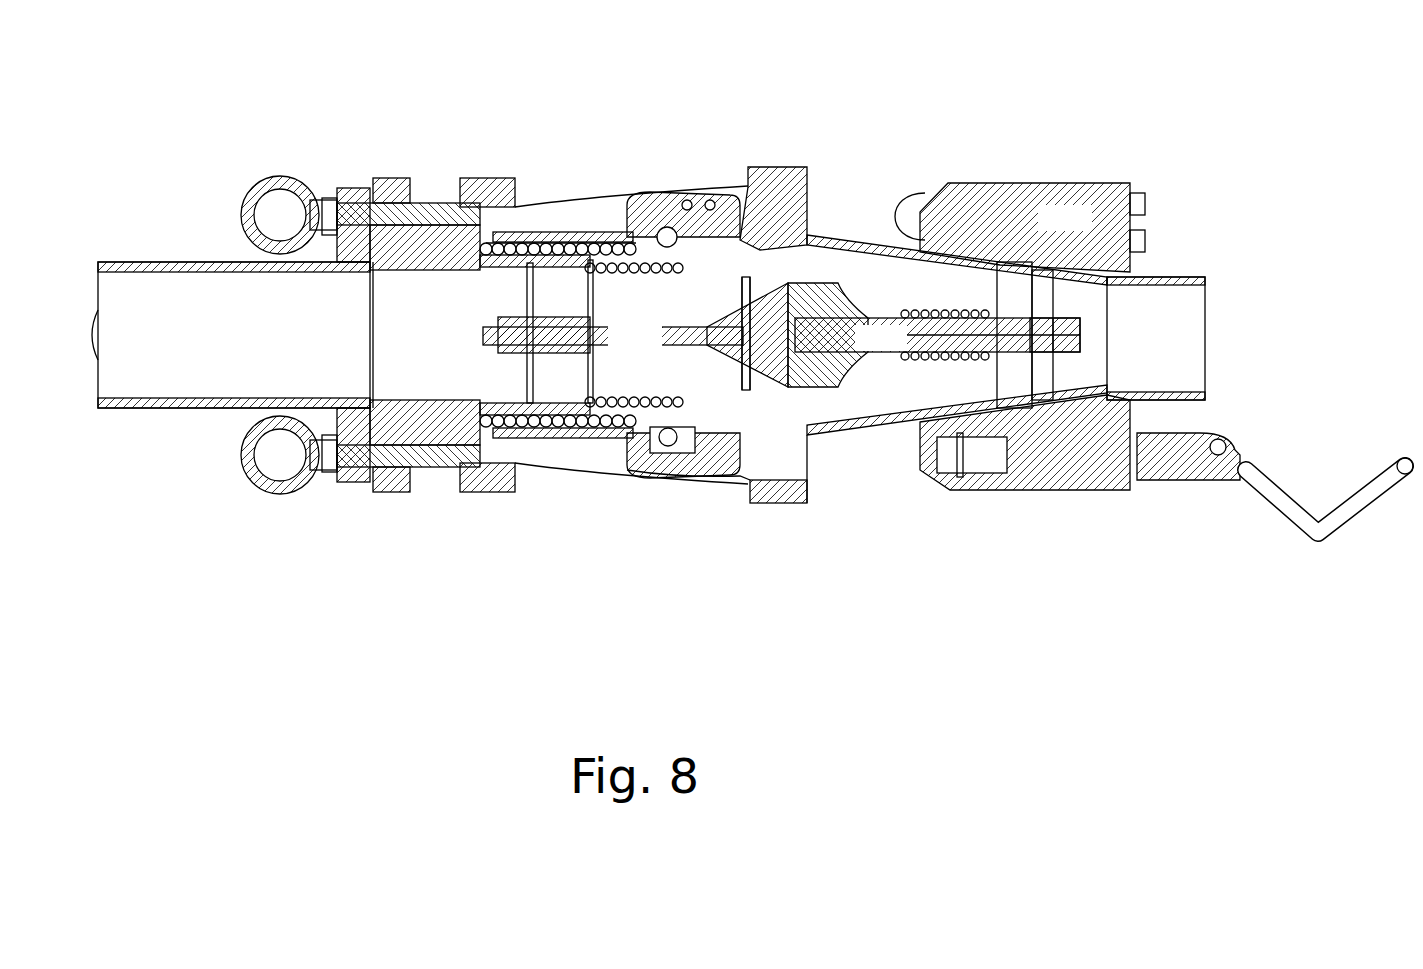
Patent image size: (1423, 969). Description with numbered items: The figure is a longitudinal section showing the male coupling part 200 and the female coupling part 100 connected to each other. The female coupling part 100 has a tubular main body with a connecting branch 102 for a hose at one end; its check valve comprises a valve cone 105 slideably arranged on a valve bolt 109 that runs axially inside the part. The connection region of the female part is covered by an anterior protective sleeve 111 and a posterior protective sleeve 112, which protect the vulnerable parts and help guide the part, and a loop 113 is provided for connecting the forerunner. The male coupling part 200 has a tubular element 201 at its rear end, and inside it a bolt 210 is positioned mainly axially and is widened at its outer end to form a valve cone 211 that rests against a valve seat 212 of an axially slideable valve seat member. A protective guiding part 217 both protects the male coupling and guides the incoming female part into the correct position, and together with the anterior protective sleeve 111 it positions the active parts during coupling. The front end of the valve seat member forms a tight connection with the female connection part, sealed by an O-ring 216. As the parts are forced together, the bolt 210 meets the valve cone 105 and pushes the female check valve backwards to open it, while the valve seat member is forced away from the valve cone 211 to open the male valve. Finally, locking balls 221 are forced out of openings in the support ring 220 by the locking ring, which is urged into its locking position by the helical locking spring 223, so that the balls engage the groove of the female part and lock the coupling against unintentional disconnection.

The female coupling part 100 is at (1010, 577).
The connecting branch 102 is at (1190, 285).
The valve cone 105 is at (812, 283).
The valve bolt 109 is at (903, 350).
The anterior protective sleeve 111 is at (718, 460).
The posterior protective sleeve 112 is at (1088, 230).
The loop 113 is at (912, 212).
The male coupling part 200 is at (237, 585).
The tube 201 is at (232, 335).
The bolt 210 is at (660, 347).
The valve cone 211 is at (772, 310).
The valve seat 212 is at (762, 300).
The O-ring 216 is at (746, 400).
The protective guiding part 217 is at (785, 170).
The support ring 220 is at (688, 437).
The locking balls 221 is at (662, 437).
The helical locking spring 223 is at (566, 245).